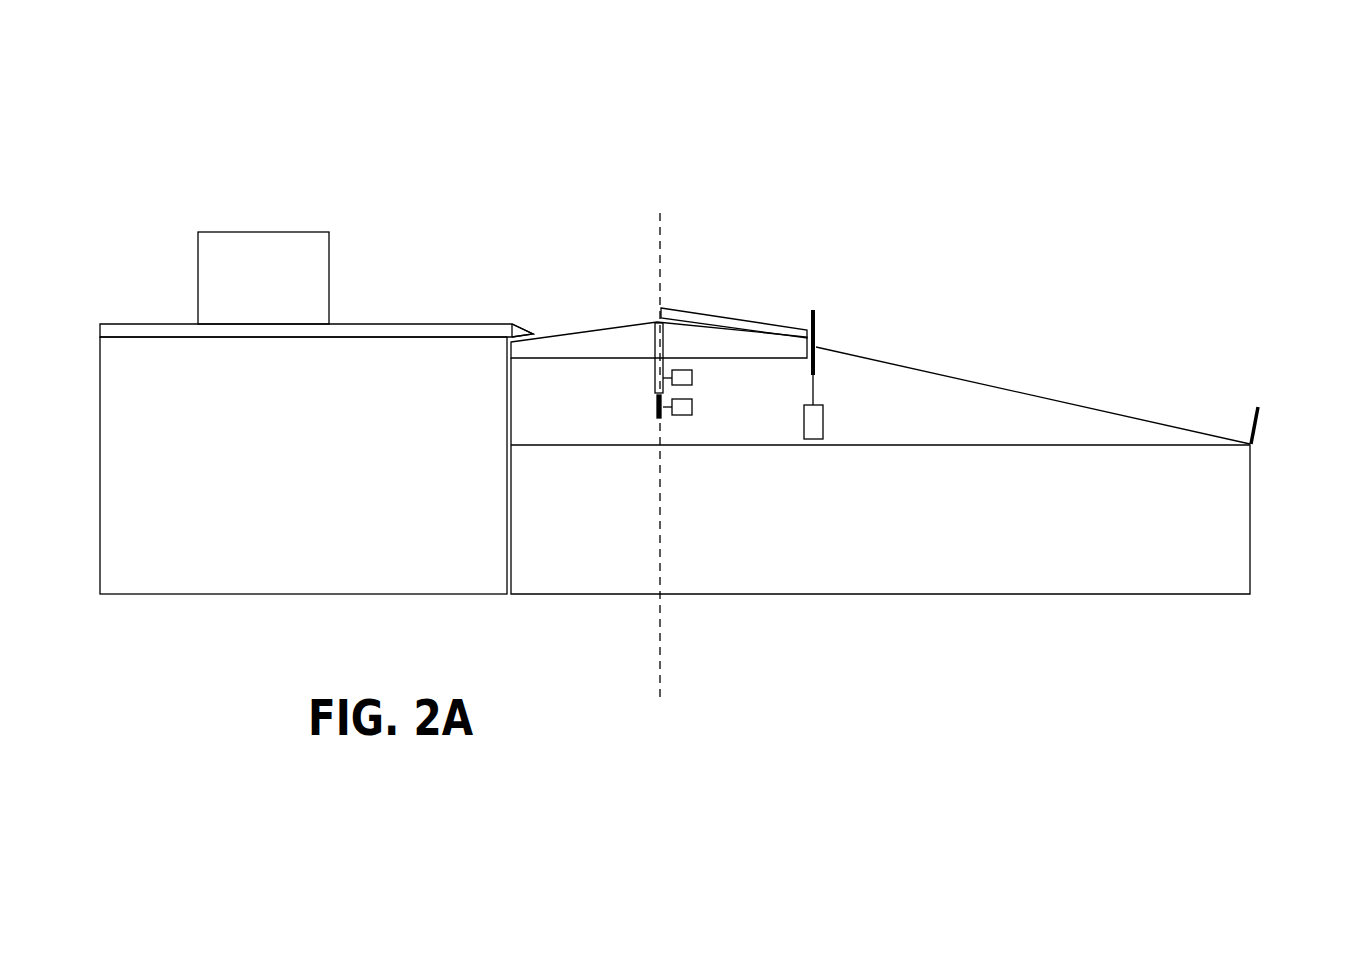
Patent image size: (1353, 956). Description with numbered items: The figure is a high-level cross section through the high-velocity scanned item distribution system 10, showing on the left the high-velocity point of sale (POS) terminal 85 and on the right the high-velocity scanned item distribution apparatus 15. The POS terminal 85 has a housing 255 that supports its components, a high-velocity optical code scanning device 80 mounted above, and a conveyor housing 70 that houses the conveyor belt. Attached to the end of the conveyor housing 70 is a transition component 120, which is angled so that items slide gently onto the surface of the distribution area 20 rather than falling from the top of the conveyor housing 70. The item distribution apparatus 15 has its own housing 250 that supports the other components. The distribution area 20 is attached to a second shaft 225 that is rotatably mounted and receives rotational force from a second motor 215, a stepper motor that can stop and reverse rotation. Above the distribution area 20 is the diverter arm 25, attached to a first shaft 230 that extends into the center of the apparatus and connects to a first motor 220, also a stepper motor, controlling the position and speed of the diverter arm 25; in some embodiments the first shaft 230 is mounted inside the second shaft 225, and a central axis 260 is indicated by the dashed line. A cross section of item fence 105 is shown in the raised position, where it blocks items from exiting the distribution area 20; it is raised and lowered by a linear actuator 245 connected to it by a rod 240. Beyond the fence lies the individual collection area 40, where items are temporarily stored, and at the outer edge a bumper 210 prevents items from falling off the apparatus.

The high-velocity scanned item distribution system 10 is at (227, 75).
The high-velocity point of sale (POS) terminal 85 is at (157, 276).
The high-velocity optical code scanning device 80 is at (250, 232).
The conveyor housing 70 is at (430, 324).
The transition component 120 is at (522, 324).
The distribution area 20 is at (610, 322).
The diverter arm 25 is at (735, 316).
The reference axis 260 is at (660, 232).
The second shaft 225 is at (654, 368).
The first shaft 230 is at (657, 408).
The second motor 215 is at (692, 378).
The first motor 220 is at (692, 407).
The item fence 105 is at (815, 325).
The rod 240 is at (815, 385).
The linear actuator 245 is at (823, 422).
The high-velocity scanned item distribution apparatus 15 is at (992, 428).
The individual collection area 40 is at (1060, 397).
The bumper 210 is at (1258, 420).
The housing 255 is at (327, 482).
The housing 250 is at (927, 551).